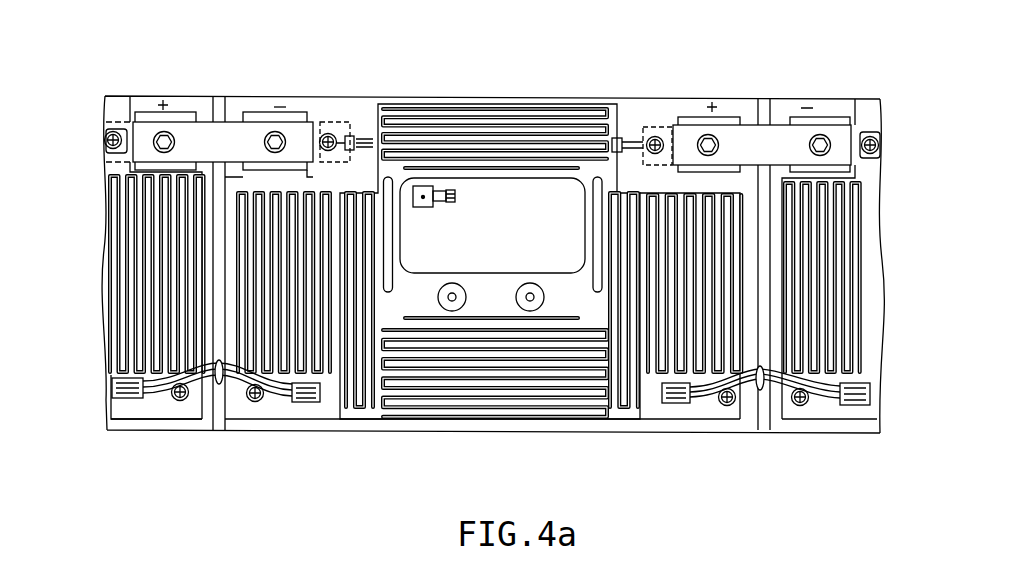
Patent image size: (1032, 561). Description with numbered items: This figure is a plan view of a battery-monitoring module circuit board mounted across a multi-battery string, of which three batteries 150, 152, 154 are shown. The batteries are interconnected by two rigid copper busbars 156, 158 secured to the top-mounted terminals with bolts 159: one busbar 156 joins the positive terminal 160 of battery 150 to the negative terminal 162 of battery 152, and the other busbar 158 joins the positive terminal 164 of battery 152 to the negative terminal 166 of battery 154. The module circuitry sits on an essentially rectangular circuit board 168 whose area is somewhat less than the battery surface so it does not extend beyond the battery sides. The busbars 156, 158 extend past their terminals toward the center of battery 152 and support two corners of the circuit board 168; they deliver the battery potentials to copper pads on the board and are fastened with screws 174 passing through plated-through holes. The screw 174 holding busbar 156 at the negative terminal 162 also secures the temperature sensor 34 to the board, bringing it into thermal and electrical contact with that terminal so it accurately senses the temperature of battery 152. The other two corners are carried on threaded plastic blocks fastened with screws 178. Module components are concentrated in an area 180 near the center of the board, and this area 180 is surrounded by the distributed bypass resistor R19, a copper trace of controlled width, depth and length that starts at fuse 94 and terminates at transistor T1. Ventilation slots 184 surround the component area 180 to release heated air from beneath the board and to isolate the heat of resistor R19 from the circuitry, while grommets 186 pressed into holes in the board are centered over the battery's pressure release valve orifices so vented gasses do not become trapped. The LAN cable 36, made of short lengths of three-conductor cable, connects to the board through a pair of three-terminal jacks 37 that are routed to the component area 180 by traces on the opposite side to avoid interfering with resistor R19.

The battery 150 is at (117, 97).
The battery 152 is at (498, 106).
The battery 154 is at (860, 98).
The busbar 156 is at (222, 98).
The busbar 158 is at (765, 98).
The bolt 159 is at (273, 128).
The positive terminal 160 is at (151, 110).
The negative terminal 162 is at (243, 110).
The positive terminal 164 is at (700, 115).
The negative terminal 166 is at (832, 98).
The circuit board 168 is at (436, 108).
The screw 174 is at (326, 130).
The screw 178 is at (256, 402).
The module component area 180 is at (512, 180).
The ventilation slot 184 is at (530, 311).
The grommet 186 is at (452, 311).
The temperature sensor 34 is at (352, 133).
The fuse 94 is at (614, 130).
The LAN cable 36 is at (219, 384).
The three-terminal jack 37 is at (300, 402).
The transistor T1 is at (412, 185).
The bypass resistor R19 is at (600, 176).